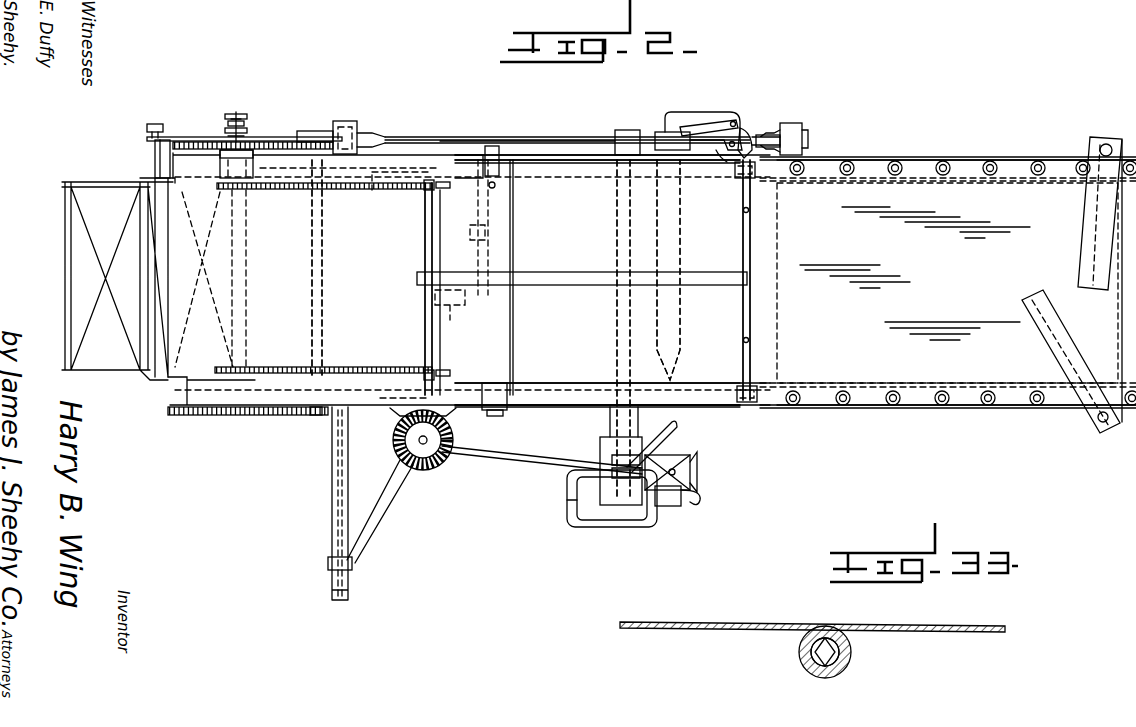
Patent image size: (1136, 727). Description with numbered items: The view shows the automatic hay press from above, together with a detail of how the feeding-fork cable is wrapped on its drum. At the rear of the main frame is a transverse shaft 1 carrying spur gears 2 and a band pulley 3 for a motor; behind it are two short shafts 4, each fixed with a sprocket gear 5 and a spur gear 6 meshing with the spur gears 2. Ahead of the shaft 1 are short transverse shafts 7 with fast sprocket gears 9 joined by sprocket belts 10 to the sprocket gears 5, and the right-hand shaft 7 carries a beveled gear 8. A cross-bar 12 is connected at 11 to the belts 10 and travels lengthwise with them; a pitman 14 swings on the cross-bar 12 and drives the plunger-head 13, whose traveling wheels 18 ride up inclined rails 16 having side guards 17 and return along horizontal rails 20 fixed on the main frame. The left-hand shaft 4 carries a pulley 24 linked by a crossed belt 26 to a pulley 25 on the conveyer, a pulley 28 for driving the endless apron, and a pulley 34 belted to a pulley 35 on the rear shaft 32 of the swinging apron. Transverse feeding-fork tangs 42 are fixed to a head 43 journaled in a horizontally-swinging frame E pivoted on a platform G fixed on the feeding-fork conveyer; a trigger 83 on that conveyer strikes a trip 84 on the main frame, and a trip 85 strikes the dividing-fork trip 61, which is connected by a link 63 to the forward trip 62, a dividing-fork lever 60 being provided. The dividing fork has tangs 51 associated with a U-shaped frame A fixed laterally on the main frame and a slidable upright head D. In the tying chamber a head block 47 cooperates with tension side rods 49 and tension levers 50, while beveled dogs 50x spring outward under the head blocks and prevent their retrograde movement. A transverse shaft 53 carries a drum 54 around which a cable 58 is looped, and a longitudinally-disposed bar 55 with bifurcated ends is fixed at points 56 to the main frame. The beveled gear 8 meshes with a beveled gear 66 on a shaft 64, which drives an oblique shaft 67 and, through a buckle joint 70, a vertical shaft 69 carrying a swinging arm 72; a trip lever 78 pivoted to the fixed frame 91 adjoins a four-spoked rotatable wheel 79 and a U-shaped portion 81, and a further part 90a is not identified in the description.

In FIG. 2, the transverse shaft 1 is at (324, 290).
In FIG. 2, the spur gears 2 is at (318, 416).
In FIG. 2, the band pulley 3 is at (340, 124).
In FIG. 2, the short shafts 4 is at (223, 416).
In FIG. 2, the sprocket gear 5 is at (254, 365).
In FIG. 2, the spur gear 6 is at (185, 416).
In FIG. 2, the short transverse shafts 7 is at (396, 283).
In FIG. 2, the beveled gear 8 is at (392, 414).
In FIG. 2, the sprocket gears 9 is at (445, 376).
In FIG. 2, the sprocket belts 10 is at (702, 404).
In FIG. 2, the connection point 11 is at (425, 370).
In FIG. 2, the cross-bar 12 is at (425, 250).
In FIG. 2, the plunger-head 13 is at (742, 318).
In FIG. 2, the pitman 14 is at (553, 286).
In FIG. 2, the inclined rails 16 is at (597, 424).
In FIG. 2, the side guards 17 is at (588, 123).
In FIG. 2, the traveling wheels 18 is at (757, 396).
In FIG. 2, the horizontal rails 20 is at (836, 390).
In FIG. 2, the pulley 24 is at (246, 118).
In FIG. 2, the pulley 25 is at (170, 137).
In FIG. 2, the crossed belt 26 is at (200, 141).
In FIG. 2, the pulley 28 is at (254, 134).
In FIG. 2, the rear shaft 32 is at (155, 157).
In FIG. 2, the pulley 34 is at (247, 121).
In FIG. 2, the pulley 35 is at (153, 125).
In FIG. 2, the feeding-fork tangs 42 is at (681, 262).
In FIG. 2, the head 43 is at (672, 140).
In FIG. 2, the head block 47 is at (778, 272).
In FIG. 2, the tension side rods 49 is at (1102, 423).
In FIG. 2, the tension levers 50 is at (1075, 345).
In FIG. 2, the beveled dogs 50x is at (748, 385).
In FIG. 2, the dividing fork tangs 51 is at (335, 500).
In FIG. 2, the transverse shaft 53 is at (618, 340).
In FIG. 2, the drum 54 is at (626, 128).
In FIG. 2, the longitudinally-disposed bar 55 is at (462, 137).
In FIG. 2, the connection points 56 is at (803, 130).
In FIG. 2, the cable 58 is at (412, 137).
In FIG. 3a, the cable 58 is at (675, 621).
In FIG. 2, the dividing-fork lever 60 is at (382, 502).
In FIG. 2, the dividing-fork trip 61 is at (441, 250).
In FIG. 2, the dividing-fork trip 62 is at (490, 230).
In FIG. 2, the link 63 is at (463, 306).
In FIG. 2, the shaft 64 is at (427, 440).
In FIG. 2, the beveled gear 66 is at (432, 458).
In FIG. 2, the oblique shaft 67 is at (498, 456).
In FIG. 2, the vertical shaft 69 is at (632, 478).
In FIG. 2, the buckle joint 70 is at (612, 480).
In FIG. 2, the swinging arm 72 is at (642, 442).
In FIG. 2, the trip lever 78 is at (580, 528).
In FIG. 2, the rotatable wheel 79 is at (692, 464).
In FIG. 2, the U-shaped portion 81 is at (702, 497).
In FIG. 2, the trigger 83 is at (745, 128).
In FIG. 2, the trip 84 is at (500, 146).
In FIG. 2, the trip 85 is at (726, 165).
In FIG. 2, the arm 90a is at (766, 136).
In FIG. 2, the fixed frame 91 is at (646, 490).
In FIG. 2, the U-shaped frame A is at (330, 528).
In FIG. 2, the upright head D is at (328, 566).
In FIG. 2, the horizontally-swinging frame E is at (660, 132).
In FIG. 2, the platform G is at (710, 112).